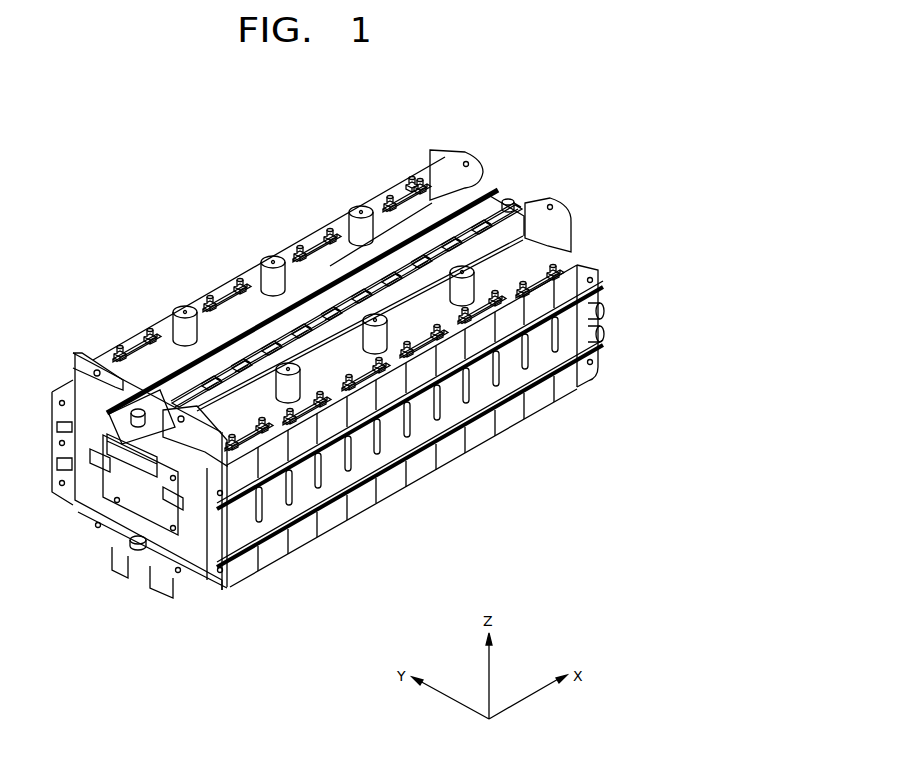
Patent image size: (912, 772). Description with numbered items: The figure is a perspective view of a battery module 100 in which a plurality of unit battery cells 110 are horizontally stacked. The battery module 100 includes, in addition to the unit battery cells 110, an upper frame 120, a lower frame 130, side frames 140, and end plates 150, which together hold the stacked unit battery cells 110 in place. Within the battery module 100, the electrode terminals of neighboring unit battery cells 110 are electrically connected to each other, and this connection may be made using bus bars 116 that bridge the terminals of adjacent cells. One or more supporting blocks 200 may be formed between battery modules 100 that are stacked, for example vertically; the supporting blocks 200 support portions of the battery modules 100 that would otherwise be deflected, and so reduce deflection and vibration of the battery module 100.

The battery module 100 is at (146, 258).
The unit battery cells 110 is at (532, 404).
The bus bars 116 is at (313, 238).
The upper frame 120 is at (500, 198).
The lower frame 130 is at (163, 580).
The side frames 140 is at (567, 353).
The end plates 150 is at (120, 518).
The supporting blocks 200 is at (357, 206).